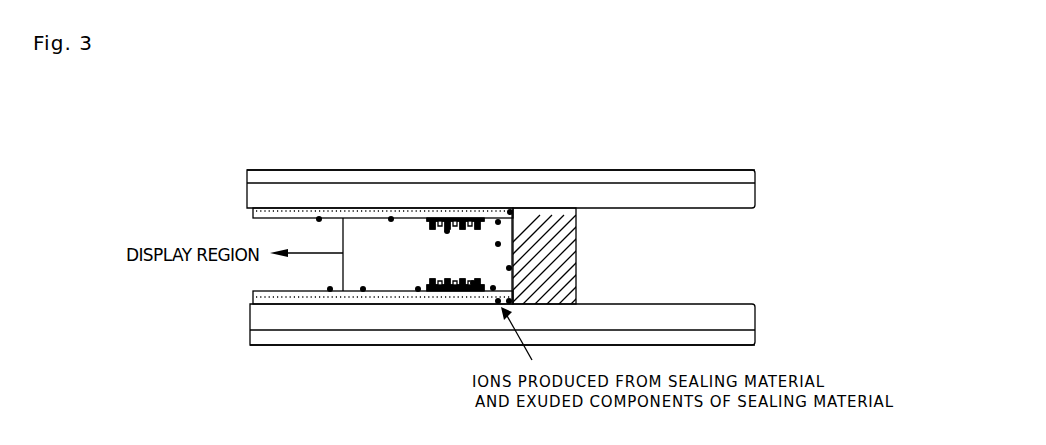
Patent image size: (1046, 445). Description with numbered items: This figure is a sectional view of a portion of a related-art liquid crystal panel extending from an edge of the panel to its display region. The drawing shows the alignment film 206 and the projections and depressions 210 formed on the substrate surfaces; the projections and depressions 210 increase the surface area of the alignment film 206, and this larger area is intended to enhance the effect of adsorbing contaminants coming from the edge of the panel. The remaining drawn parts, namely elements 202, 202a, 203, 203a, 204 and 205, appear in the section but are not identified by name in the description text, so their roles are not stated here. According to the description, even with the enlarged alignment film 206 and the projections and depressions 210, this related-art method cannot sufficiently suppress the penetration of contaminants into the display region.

The lower substrate 202 is at (277, 316).
The outer surface of lower substrate 202a is at (250, 341).
The upper substrate 203 is at (267, 188).
The outer surface of upper substrate 203a is at (247, 170).
The sealing material 204 is at (576, 255).
The liquid crystal layer 205 is at (398, 286).
The alignment film 206 is at (307, 208).
The projections and depressions 210 is at (453, 283).